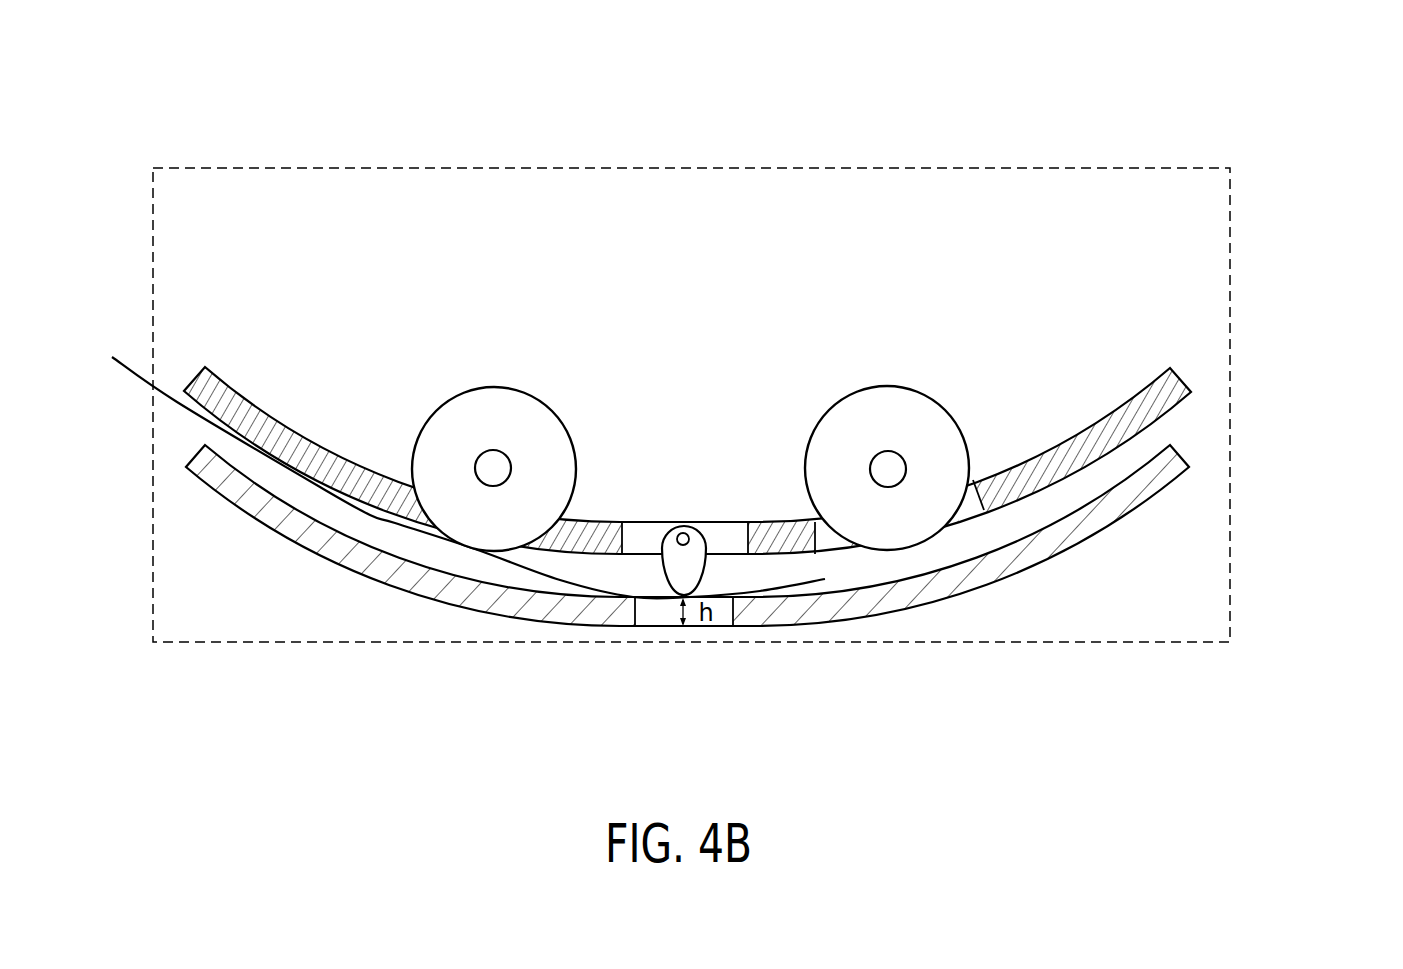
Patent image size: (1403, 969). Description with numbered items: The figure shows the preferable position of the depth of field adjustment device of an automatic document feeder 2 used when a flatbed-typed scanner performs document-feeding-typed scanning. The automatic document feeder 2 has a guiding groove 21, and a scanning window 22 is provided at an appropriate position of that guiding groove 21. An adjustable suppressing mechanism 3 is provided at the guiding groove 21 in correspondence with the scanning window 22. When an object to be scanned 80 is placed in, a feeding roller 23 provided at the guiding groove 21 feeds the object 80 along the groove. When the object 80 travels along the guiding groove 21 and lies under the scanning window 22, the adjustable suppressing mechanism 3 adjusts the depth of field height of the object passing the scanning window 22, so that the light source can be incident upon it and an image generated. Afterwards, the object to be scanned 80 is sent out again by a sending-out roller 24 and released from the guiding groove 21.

The automatic document feeder 2 is at (1230, 273).
The adjustable suppressing mechanism 3 is at (683, 500).
The guiding groove 21 is at (1103, 472).
The scanning window 22 is at (723, 618).
The feeding roller 23 is at (490, 412).
The sending-out roller 24 is at (885, 418).
The object to be scanned 80 is at (177, 400).